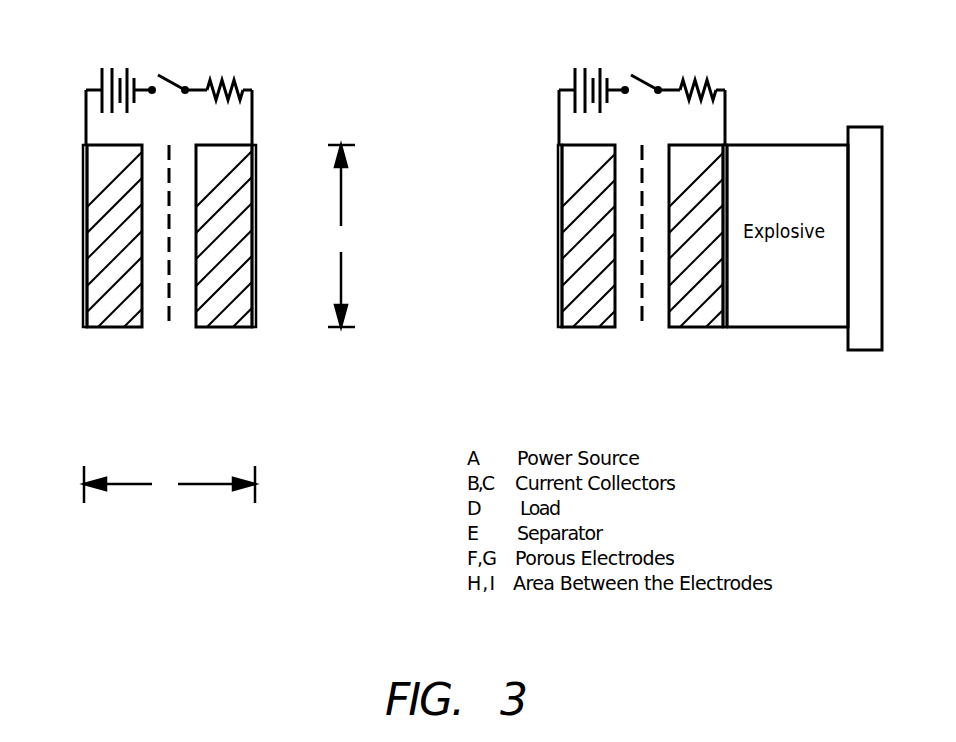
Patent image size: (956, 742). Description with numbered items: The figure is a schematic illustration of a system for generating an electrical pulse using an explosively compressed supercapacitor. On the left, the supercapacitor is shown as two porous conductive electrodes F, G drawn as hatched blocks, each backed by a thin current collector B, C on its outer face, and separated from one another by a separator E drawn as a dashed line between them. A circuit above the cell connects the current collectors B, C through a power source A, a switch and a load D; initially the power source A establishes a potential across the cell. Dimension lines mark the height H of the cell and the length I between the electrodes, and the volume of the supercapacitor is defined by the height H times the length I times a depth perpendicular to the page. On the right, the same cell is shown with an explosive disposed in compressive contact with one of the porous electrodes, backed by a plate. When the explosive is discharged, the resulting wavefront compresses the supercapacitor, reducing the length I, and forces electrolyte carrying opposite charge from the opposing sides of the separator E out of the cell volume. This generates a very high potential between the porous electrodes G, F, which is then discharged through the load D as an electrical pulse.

The power source A is at (109, 64).
The current collector B is at (85, 327).
The current collector C is at (252, 327).
The load D is at (222, 80).
The separator E is at (168, 327).
The porous electrode F is at (100, 262).
The porous electrode G is at (238, 232).
The height of the supercapacitor volume H is at (341, 236).
The length between the electrodes I is at (169, 484).